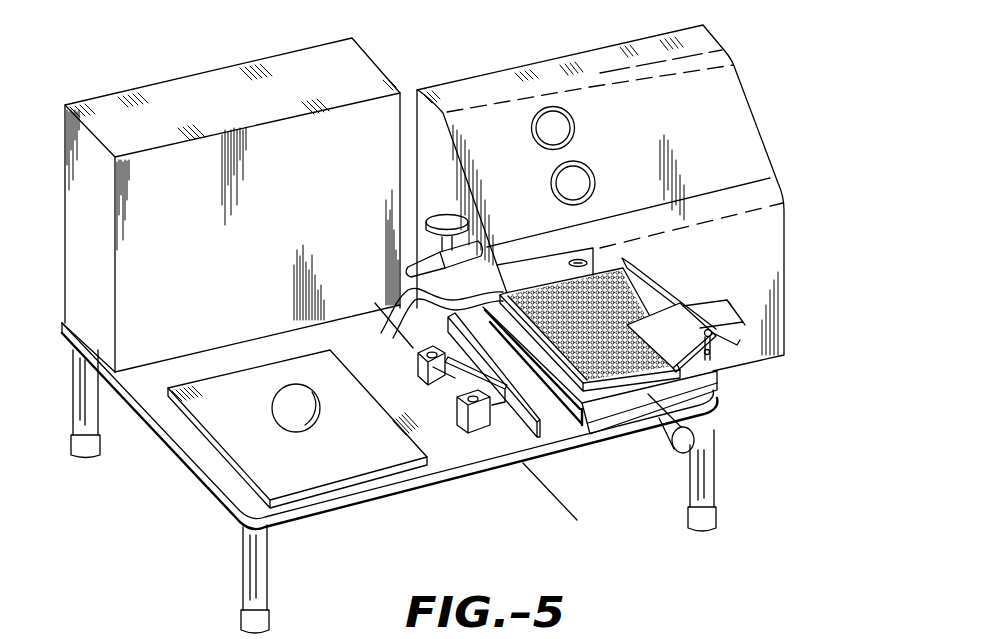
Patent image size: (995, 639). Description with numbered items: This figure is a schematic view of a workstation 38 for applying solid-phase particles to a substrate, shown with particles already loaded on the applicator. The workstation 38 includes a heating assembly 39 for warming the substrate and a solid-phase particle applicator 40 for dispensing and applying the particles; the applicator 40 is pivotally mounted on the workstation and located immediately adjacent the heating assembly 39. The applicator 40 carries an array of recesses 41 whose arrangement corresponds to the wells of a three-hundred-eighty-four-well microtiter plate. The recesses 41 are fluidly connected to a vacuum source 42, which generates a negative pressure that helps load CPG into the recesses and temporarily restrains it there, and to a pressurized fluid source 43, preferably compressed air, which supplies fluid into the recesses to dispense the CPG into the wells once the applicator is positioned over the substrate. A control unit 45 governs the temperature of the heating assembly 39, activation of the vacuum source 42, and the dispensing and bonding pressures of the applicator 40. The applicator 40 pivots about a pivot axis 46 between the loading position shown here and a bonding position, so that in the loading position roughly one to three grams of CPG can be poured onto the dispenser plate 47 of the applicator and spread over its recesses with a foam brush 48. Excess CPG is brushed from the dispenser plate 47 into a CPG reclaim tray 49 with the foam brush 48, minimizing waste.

The workstation 38 is at (619, 194).
The heating assembly 39 is at (227, 352).
The solid-phase particle applicator 40 is at (708, 350).
The array of recesses 41 is at (634, 268).
The vacuum source 42 is at (447, 222).
The pressurized fluid source 43 is at (398, 336).
The control unit 45 is at (506, 128).
The pivot axis 46 is at (548, 492).
The dispenser plate 47 is at (586, 260).
The foam brush 48 is at (658, 313).
The CPG reclaim tray 49 is at (578, 443).